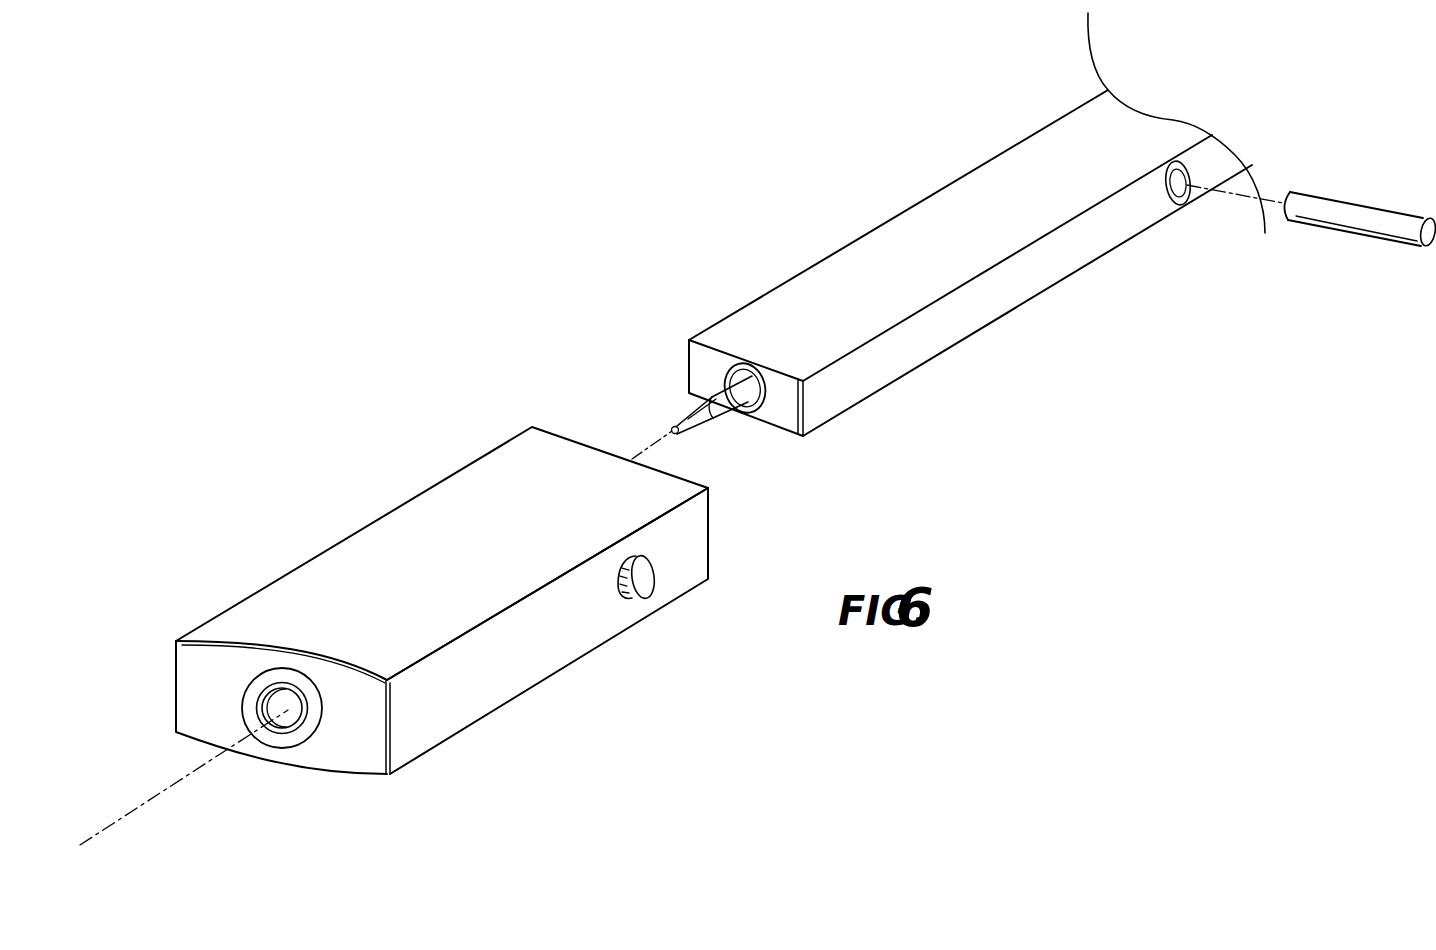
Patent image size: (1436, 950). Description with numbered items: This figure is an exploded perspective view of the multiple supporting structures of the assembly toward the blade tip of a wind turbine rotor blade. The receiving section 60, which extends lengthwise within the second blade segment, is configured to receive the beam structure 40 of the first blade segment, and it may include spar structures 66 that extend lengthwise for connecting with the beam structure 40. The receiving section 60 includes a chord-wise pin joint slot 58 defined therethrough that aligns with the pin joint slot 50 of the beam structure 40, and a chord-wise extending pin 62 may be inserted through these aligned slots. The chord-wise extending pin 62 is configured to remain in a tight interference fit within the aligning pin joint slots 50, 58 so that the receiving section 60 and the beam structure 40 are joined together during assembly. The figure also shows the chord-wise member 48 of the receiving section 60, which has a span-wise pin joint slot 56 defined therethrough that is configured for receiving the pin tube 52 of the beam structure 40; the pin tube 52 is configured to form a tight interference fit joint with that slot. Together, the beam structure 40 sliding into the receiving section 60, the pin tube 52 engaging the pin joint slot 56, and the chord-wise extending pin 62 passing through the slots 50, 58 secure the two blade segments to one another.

The beam structure 40 is at (995, 180).
The chord-wise member 48 is at (210, 707).
The pin joint slot 50 is at (1178, 197).
The pin tube 52 is at (692, 437).
The pin joint slot 56 is at (266, 728).
The chord-wise pin joint slot 58 is at (638, 587).
The receiving section 60 is at (338, 543).
The chord-wise extending pin 62 is at (1373, 200).
The spar structures 66 is at (568, 663).